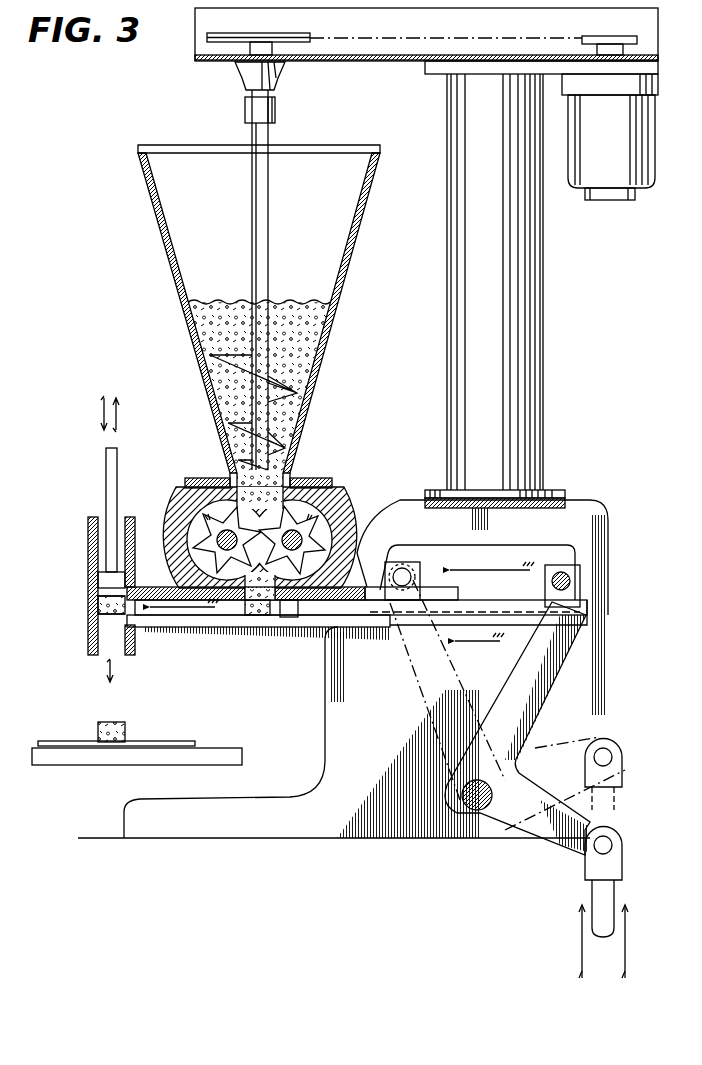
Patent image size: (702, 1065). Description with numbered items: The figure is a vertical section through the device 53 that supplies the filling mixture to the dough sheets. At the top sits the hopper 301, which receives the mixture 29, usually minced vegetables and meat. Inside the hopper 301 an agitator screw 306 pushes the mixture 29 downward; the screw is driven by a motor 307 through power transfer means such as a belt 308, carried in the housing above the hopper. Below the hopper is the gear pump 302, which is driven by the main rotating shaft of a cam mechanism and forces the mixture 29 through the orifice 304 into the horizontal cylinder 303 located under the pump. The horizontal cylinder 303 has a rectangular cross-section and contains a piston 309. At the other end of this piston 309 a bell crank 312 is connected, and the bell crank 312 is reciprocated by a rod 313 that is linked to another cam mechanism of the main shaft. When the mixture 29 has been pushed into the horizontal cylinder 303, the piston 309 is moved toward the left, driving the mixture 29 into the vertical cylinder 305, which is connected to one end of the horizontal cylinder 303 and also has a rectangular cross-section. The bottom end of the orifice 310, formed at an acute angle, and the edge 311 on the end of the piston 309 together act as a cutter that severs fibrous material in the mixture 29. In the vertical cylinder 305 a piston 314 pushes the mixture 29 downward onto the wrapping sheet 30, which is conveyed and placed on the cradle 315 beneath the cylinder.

The device for supplying mixture 53 is at (235, 304).
The hopper 301 is at (352, 262).
The mixture 29 is at (307, 322).
The agitator screw 306 is at (300, 392).
The gear pump 302 is at (332, 483).
The orifice 304 is at (263, 523).
The horizontal cylinder 303 is at (361, 645).
The vertical cylinder 305 is at (73, 539).
The piston 314 is at (105, 577).
The piston 309 is at (355, 612).
The orifice 310 is at (252, 617).
The edge 311 is at (298, 617).
The bell crank 312 is at (525, 700).
The rod 313 is at (600, 887).
The cradle 315 is at (137, 763).
The sheet 30 is at (167, 742).
The motor 307 is at (610, 163).
The belt 308 is at (370, 40).